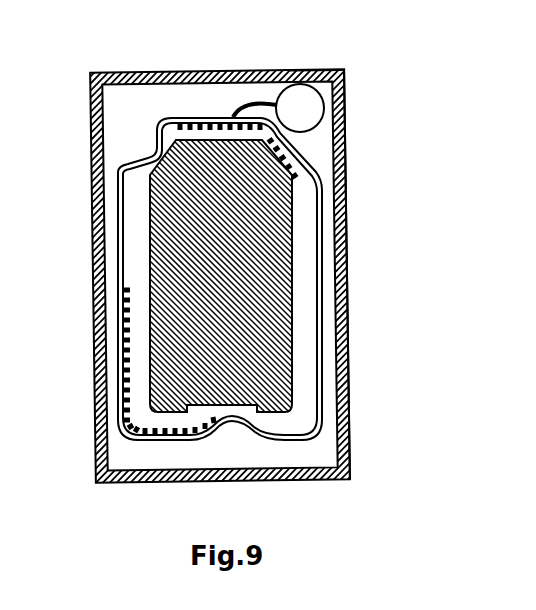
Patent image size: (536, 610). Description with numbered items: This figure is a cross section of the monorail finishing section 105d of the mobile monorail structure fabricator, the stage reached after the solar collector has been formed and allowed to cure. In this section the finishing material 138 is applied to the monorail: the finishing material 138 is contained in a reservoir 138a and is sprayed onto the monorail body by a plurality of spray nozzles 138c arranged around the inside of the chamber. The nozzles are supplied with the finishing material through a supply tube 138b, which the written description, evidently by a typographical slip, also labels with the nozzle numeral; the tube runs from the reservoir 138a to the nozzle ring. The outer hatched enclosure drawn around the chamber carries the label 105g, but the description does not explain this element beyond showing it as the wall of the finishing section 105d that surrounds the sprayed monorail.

The monorail finishing section 105d is at (108, 52).
The housing side wall 105g is at (346, 287).
The finishing material 138 is at (305, 108).
The reservoir 138a is at (328, 71).
The connecting tube 138b is at (245, 104).
The spray nozzles 138c is at (303, 162).